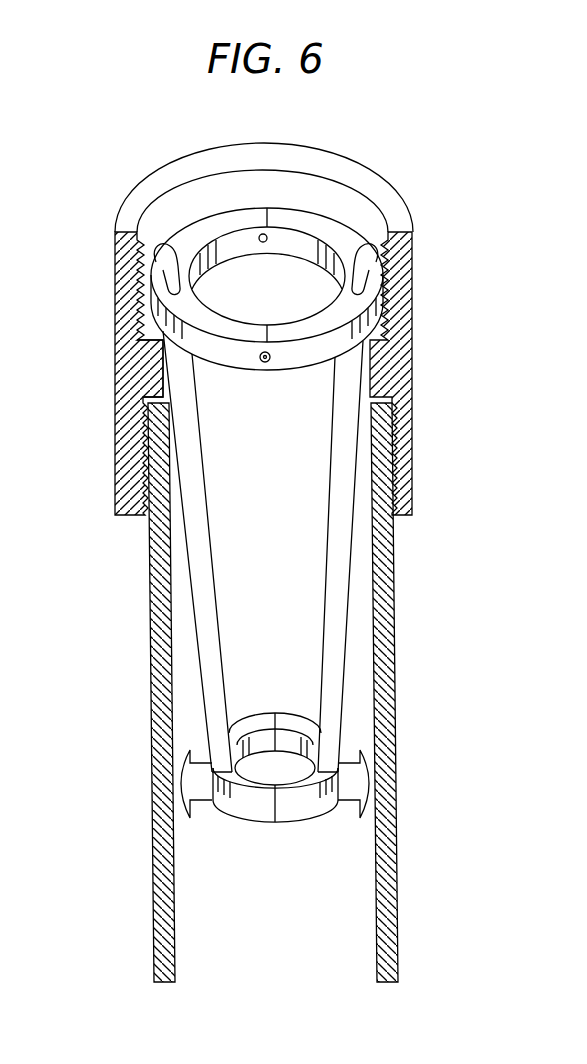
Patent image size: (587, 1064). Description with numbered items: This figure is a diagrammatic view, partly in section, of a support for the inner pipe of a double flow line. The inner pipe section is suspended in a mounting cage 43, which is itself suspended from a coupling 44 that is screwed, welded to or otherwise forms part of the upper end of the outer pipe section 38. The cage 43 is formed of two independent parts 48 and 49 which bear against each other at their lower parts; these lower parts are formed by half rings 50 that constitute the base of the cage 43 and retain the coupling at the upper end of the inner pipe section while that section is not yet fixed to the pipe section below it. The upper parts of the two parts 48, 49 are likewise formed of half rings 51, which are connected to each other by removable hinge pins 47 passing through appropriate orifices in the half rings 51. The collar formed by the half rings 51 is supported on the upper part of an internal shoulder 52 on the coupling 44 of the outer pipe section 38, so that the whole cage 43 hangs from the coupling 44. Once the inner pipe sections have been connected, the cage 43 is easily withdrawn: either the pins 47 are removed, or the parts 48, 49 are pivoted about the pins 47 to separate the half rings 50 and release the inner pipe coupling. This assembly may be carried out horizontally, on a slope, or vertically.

The outer pipe section 38 is at (377, 623).
The mounting cage 43 is at (307, 266).
The coupling 44 is at (390, 357).
The hinge pins 47 is at (265, 363).
The cage part 48 is at (192, 520).
The cage part 49 is at (338, 567).
The half rings 50 is at (242, 807).
The half rings 51 is at (233, 355).
The internal shoulder 52 is at (140, 370).